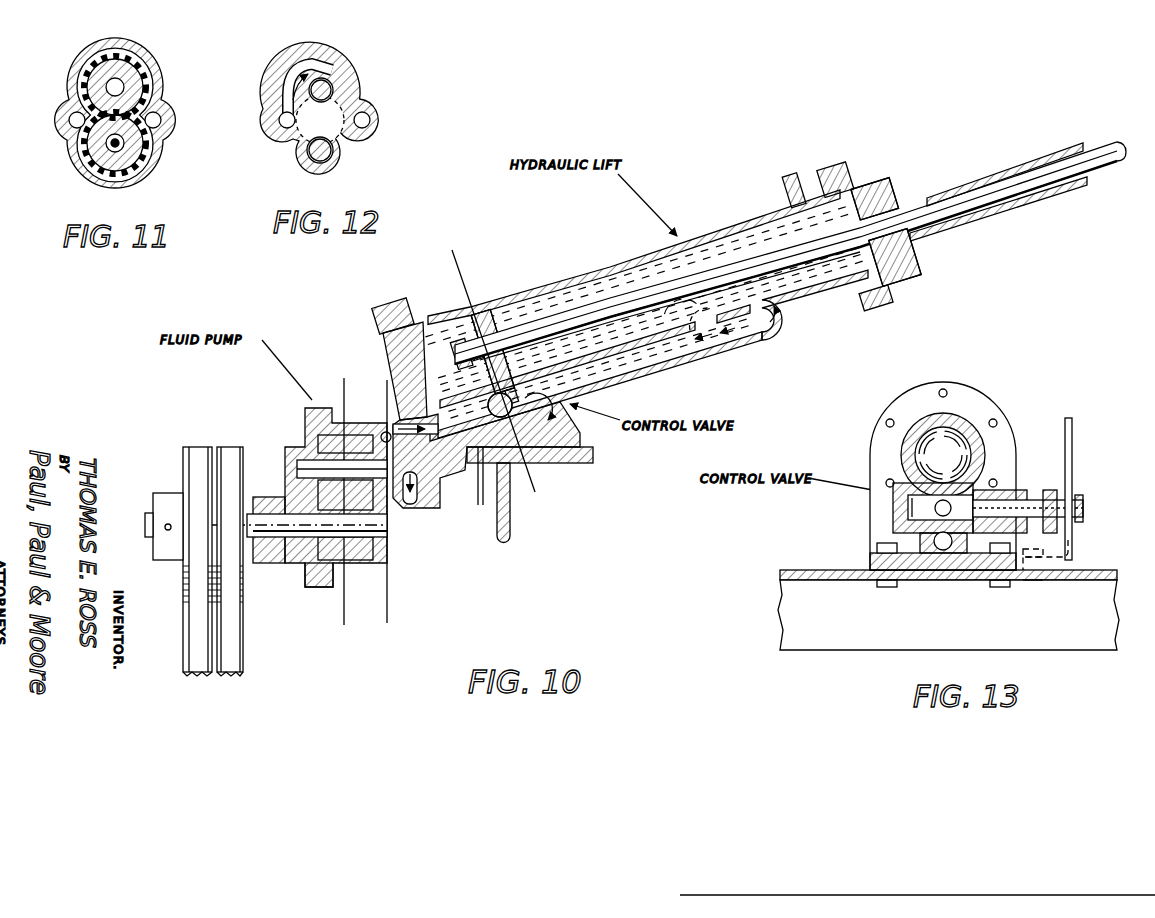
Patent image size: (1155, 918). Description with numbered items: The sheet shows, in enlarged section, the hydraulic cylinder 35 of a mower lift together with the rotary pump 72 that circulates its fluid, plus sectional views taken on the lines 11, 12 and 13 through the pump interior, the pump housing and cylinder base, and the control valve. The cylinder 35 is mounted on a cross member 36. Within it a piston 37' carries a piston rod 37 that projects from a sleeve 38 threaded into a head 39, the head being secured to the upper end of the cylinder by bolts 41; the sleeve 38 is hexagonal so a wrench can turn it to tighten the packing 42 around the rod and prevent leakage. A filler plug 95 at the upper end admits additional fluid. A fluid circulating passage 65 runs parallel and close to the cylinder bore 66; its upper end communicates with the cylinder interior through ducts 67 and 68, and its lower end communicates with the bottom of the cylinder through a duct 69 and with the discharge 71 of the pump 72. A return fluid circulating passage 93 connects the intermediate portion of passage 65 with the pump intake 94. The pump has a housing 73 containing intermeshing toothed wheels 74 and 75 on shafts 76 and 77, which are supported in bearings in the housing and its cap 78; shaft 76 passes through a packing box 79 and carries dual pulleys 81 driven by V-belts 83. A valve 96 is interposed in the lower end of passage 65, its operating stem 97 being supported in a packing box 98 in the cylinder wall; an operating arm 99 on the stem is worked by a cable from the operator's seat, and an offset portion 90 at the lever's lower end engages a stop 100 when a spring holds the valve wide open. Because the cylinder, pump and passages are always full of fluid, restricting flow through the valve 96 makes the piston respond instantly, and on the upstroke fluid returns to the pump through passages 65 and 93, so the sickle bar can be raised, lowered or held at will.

In FIG. 10, the hydraulic cylinder 35 is at (606, 255).
In FIG. 13, the hydraulic cylinder 35 is at (968, 406).
In FIG. 10, the cross member 36 is at (567, 470).
In FIG. 13, the cross member 36 is at (812, 573).
In FIG. 10, the piston rod 37 is at (783, 251).
In FIG. 10, the piston 37' is at (486, 326).
In FIG. 10, the sleeve 38 is at (982, 172).
In FIG. 10, the head 39 is at (880, 188).
In FIG. 10, the bolts 41 is at (850, 160).
In FIG. 10, the packing 42 is at (900, 256).
In FIG. 10, the fluid circulating passage 65 is at (655, 360).
In FIG. 13, the fluid circulating passage 65 is at (945, 498).
In FIG. 10, the cylinder bore 66 is at (680, 257).
In FIG. 13, the cylinder bore 66 is at (913, 450).
In FIG. 10, the duct 67 is at (730, 316).
In FIG. 10, the duct 68 is at (781, 333).
In FIG. 10, the duct 69 is at (438, 400).
In FIG. 10, the discharge 71 is at (386, 432).
In FIG. 11, the discharge 71 is at (70, 120).
In FIG. 12, the discharge 71 is at (290, 112).
In FIG. 10, the rotary pump 72 is at (303, 425).
In FIG. 10, the housing 73 is at (388, 570).
In FIG. 11, the housing 73 is at (82, 175).
In FIG. 10, the toothed wheel 74 is at (358, 548).
In FIG. 11, the toothed wheel 74 is at (100, 187).
In FIG. 10, the toothed wheel 75 is at (322, 450).
In FIG. 11, the toothed wheel 75 is at (83, 73).
In FIG. 10, the shaft 76 is at (381, 533).
In FIG. 11, the shaft 76 is at (145, 153).
In FIG. 12, the shaft 76 is at (334, 155).
In FIG. 10, the shaft 77 is at (305, 467).
In FIG. 11, the shaft 77 is at (157, 80).
In FIG. 12, the shaft 77 is at (335, 73).
In FIG. 10, the cap 78 is at (312, 582).
In FIG. 10, the packing box 79 is at (285, 545).
In FIG. 10, the dual pulleys 81 is at (222, 446).
In FIG. 10, the V-belts 83 is at (212, 673).
In FIG. 13, the offset portion 90 is at (1075, 542).
In FIG. 10, the return fluid circulating passage 93 is at (481, 447).
In FIG. 12, the return fluid circulating passage 93 is at (334, 97).
In FIG. 13, the return fluid circulating passage 93 is at (942, 550).
In FIG. 11, the intake 94 is at (162, 120).
In FIG. 12, the intake 94 is at (371, 120).
In FIG. 10, the filler plug 95 is at (793, 170).
In FIG. 10, the valve 96 is at (507, 393).
In FIG. 13, the valve 96 is at (918, 508).
In FIG. 13, the operating stem 97 is at (1050, 490).
In FIG. 13, the packing box 98 is at (1030, 490).
In FIG. 13, the operating arm 99 is at (1069, 418).
In FIG. 13, the stop 100 is at (1043, 585).
In FIG. 10, the section line 11- 11 is at (342, 387).
In FIG. 10, the section line 12- 12 is at (385, 382).
In FIG. 10, the section line 13- 13 is at (440, 264).